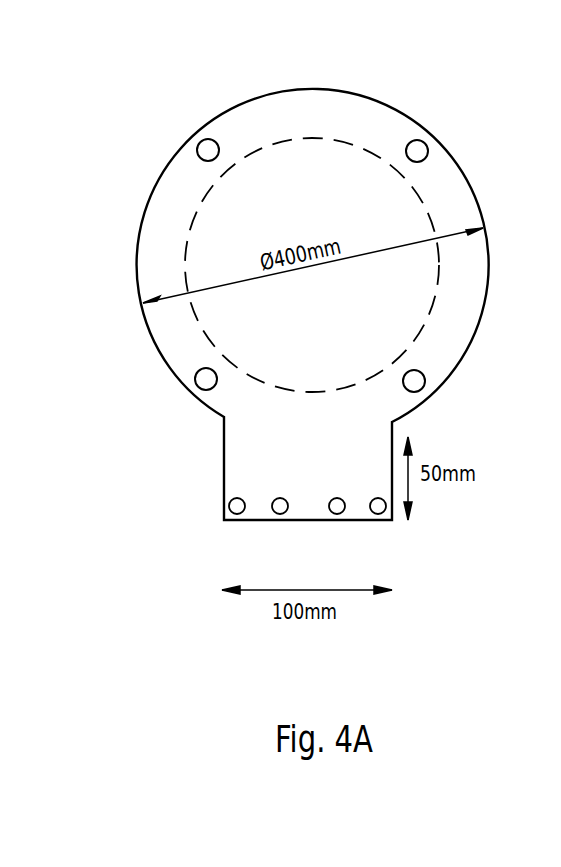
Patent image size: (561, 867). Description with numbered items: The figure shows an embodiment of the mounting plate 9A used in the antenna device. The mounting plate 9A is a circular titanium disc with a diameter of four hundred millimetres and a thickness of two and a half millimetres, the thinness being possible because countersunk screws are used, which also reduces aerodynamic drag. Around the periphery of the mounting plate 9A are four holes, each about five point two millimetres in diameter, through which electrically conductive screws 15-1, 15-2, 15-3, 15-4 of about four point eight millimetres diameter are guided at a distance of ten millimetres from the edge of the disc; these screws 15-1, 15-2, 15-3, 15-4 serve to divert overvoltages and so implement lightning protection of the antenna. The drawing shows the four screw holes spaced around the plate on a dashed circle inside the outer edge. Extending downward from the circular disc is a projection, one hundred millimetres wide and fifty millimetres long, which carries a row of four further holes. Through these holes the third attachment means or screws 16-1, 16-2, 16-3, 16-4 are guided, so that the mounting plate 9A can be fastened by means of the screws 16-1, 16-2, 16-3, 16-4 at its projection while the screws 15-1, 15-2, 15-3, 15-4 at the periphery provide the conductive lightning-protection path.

The mounting plate 9A is at (488, 268).
The screw 15-1 is at (208, 150).
The screw 15-2 is at (417, 151).
The screw 15-3 is at (206, 379).
The screw 15-4 is at (414, 381).
The third attachment means or screw 16-1 is at (237, 506).
The third attachment means or screw 16-2 is at (280, 506).
The third attachment means or screw 16-3 is at (337, 506).
The third attachment means or screw 16-4 is at (378, 506).